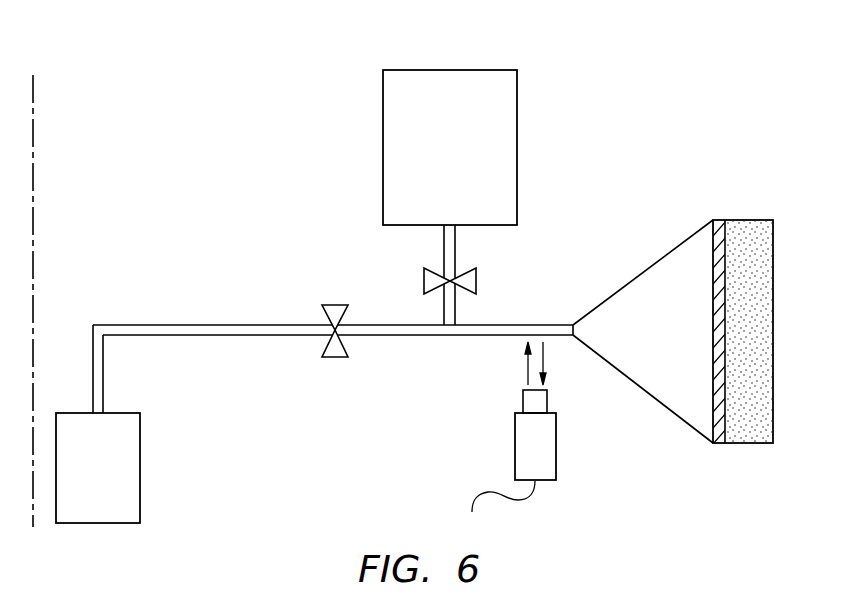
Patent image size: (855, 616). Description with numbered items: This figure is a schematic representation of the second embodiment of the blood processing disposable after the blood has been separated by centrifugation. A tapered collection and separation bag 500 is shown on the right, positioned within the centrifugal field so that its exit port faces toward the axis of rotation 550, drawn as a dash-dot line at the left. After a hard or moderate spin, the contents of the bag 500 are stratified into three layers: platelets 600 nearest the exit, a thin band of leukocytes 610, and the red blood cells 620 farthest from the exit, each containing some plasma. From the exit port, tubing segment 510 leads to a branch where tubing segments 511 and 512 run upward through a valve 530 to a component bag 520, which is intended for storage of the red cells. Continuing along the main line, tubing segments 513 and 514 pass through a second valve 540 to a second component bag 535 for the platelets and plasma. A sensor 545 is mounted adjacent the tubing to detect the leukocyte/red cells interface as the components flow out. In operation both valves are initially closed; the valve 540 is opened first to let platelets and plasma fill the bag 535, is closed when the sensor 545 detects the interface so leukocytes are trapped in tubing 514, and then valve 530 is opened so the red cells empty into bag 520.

The collection and separation bag 500 is at (773, 430).
The tubing segment 510 is at (485, 337).
The tubing segment 511 is at (457, 314).
The tubing segment 512 is at (455, 240).
The tubing segment 513 is at (415, 337).
The tubing segment 514 is at (228, 336).
The component bag 520 is at (452, 68).
The valve 530 is at (425, 283).
The component bag 535 is at (140, 478).
The valve 540 is at (335, 358).
The sensor 545 is at (556, 455).
The axis of rotation 550 is at (33, 121).
The platelets 600 is at (645, 270).
The leukocytes 610 is at (716, 218).
The red blood cells 620 is at (758, 218).